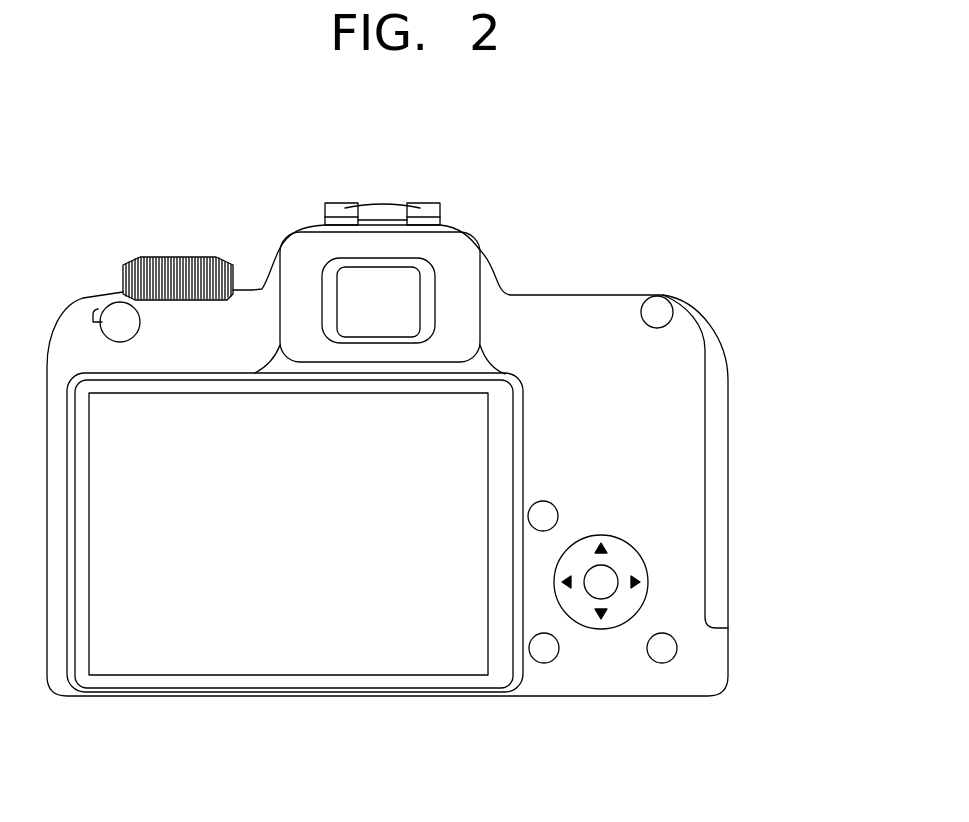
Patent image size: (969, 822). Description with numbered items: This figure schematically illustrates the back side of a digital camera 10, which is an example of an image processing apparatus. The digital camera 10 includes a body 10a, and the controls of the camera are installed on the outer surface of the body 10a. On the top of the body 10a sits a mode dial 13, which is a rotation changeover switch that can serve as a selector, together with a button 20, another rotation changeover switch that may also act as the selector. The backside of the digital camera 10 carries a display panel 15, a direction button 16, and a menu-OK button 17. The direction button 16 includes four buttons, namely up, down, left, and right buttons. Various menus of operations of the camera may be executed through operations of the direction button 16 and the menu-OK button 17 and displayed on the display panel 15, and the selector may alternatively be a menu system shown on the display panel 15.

The digital camera 10 is at (605, 268).
The body 10a is at (720, 550).
The mode dial 13 is at (180, 255).
The display panel 15 is at (318, 662).
The direction button 16 is at (600, 587).
The menu-OK button 17 is at (607, 636).
The button 20 is at (115, 312).